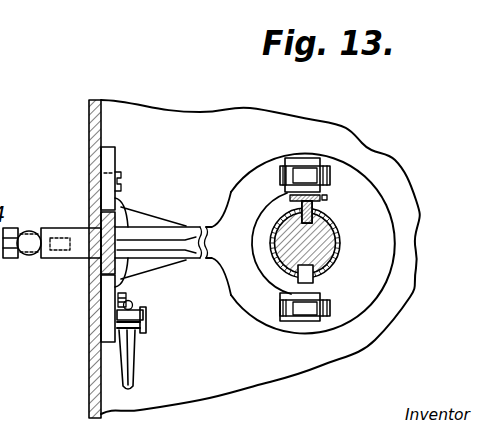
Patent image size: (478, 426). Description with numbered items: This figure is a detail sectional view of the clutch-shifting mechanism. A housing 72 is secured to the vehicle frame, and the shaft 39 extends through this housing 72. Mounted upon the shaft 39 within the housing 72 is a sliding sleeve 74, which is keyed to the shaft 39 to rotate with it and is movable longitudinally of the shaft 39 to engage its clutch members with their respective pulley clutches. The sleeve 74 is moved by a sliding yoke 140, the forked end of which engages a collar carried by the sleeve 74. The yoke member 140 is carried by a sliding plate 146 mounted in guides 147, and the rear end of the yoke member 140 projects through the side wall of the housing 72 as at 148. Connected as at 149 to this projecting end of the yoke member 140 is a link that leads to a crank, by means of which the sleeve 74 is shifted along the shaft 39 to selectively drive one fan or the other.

The housing 72 is at (92, 131).
The guides 147 is at (106, 178).
The connection of link to yoke 149 is at (37, 226).
The projecting end of yoke member 148 is at (63, 259).
The sliding plate 146 is at (121, 217).
The sliding yoke 140 is at (233, 198).
The sliding sleeve 74 is at (342, 235).
The shaft 39 is at (331, 254).